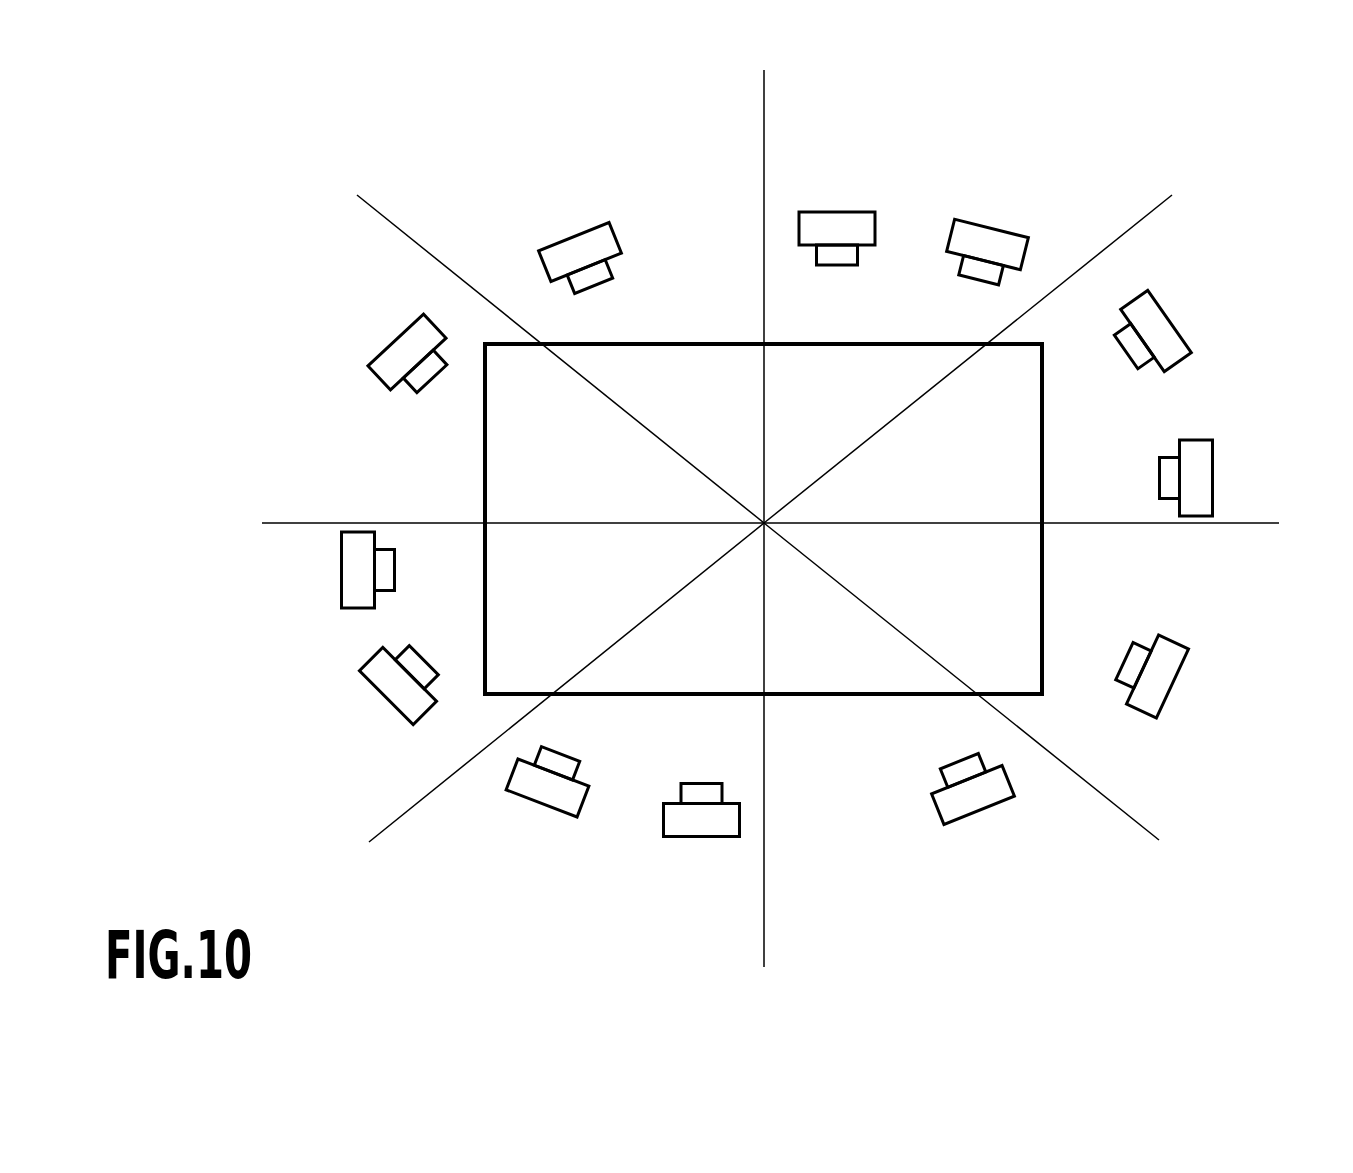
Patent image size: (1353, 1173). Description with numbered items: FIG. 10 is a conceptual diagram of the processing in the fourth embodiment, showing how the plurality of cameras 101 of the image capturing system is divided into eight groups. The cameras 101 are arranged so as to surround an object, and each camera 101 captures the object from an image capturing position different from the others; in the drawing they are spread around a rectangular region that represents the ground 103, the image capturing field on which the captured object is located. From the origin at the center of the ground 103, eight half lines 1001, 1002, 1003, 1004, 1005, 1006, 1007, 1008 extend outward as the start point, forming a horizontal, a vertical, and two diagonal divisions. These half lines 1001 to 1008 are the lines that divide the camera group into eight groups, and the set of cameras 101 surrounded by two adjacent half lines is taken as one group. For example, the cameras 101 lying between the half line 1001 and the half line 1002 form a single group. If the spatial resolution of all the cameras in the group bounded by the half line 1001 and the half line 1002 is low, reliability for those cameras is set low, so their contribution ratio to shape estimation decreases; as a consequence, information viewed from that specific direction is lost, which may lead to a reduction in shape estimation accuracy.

The camera 101 is at (1157, 637).
The ground 103 is at (885, 343).
The half line 1001 is at (1260, 523).
The half line 1002 is at (1108, 247).
The half line 1003 is at (765, 120).
The half line 1004 is at (428, 247).
The half line 1005 is at (318, 523).
The half line 1006 is at (420, 803).
The half line 1007 is at (765, 920).
The half line 1008 is at (1112, 803).